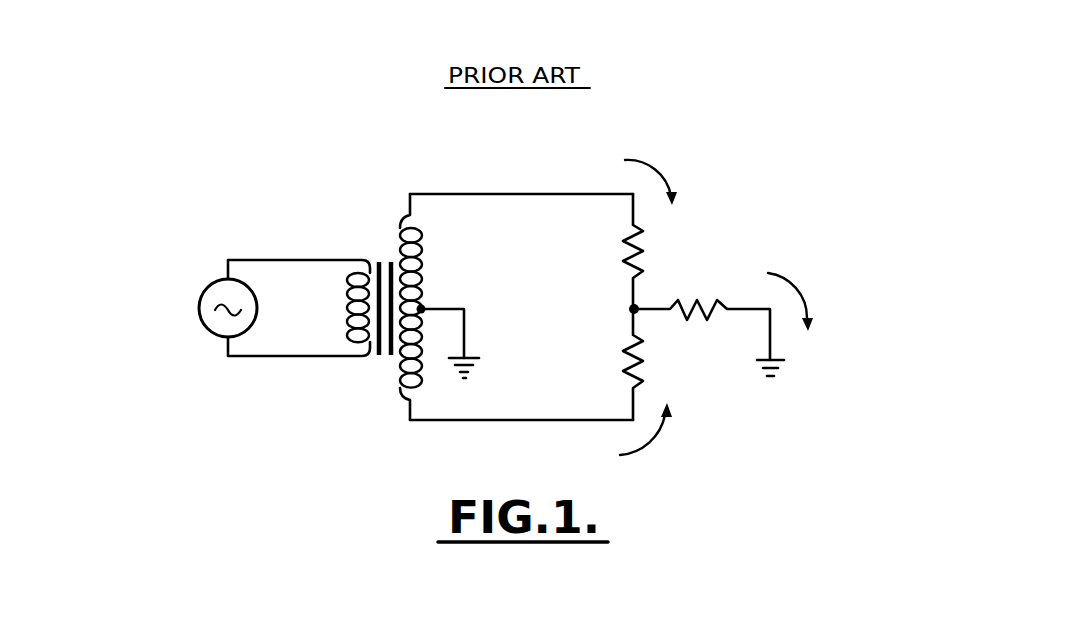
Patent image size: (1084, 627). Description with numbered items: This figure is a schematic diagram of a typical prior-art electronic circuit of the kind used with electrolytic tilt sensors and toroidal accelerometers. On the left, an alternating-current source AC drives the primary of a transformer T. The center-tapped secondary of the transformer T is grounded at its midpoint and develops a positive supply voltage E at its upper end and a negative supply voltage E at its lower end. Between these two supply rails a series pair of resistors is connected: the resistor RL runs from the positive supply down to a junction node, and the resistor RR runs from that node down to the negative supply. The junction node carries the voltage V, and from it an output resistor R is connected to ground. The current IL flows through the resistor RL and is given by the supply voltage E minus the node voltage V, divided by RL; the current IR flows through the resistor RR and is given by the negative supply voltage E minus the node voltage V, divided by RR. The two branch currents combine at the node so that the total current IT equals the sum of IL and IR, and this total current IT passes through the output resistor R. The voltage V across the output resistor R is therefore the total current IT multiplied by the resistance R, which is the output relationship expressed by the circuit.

The AC source AC is at (210, 308).
The transformer T is at (384, 307).
The supply voltage E is at (515, 314).
The resistor RL is at (617, 251).
The resistor RR is at (617, 364).
The voltage across the output resistor V is at (621, 309).
The output resistor R is at (709, 324).
The current IL is at (666, 182).
The total current IT is at (806, 301).
The current IR is at (664, 429).